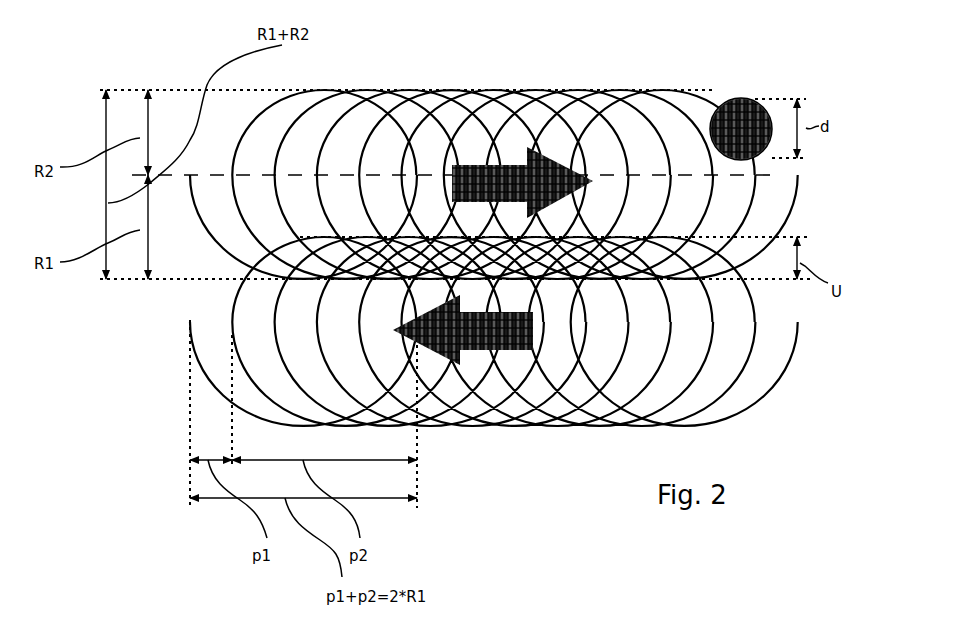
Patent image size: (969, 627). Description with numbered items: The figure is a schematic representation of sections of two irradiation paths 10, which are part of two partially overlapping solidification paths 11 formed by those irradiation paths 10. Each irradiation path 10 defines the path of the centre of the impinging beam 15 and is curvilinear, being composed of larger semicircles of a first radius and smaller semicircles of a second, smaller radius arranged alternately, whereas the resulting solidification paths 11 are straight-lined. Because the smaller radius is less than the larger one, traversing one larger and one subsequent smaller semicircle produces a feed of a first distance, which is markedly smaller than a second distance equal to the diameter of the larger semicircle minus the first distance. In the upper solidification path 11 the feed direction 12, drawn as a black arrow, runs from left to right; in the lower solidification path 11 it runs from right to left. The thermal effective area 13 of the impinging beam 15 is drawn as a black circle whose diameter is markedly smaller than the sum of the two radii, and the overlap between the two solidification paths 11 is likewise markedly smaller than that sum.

The irradiation path 10 is at (217, 248).
The solidification path 11 is at (807, 192).
The feed direction 12 is at (513, 158).
The thermal effective area 13 is at (743, 97).
The impinging beam 15 is at (717, 102).